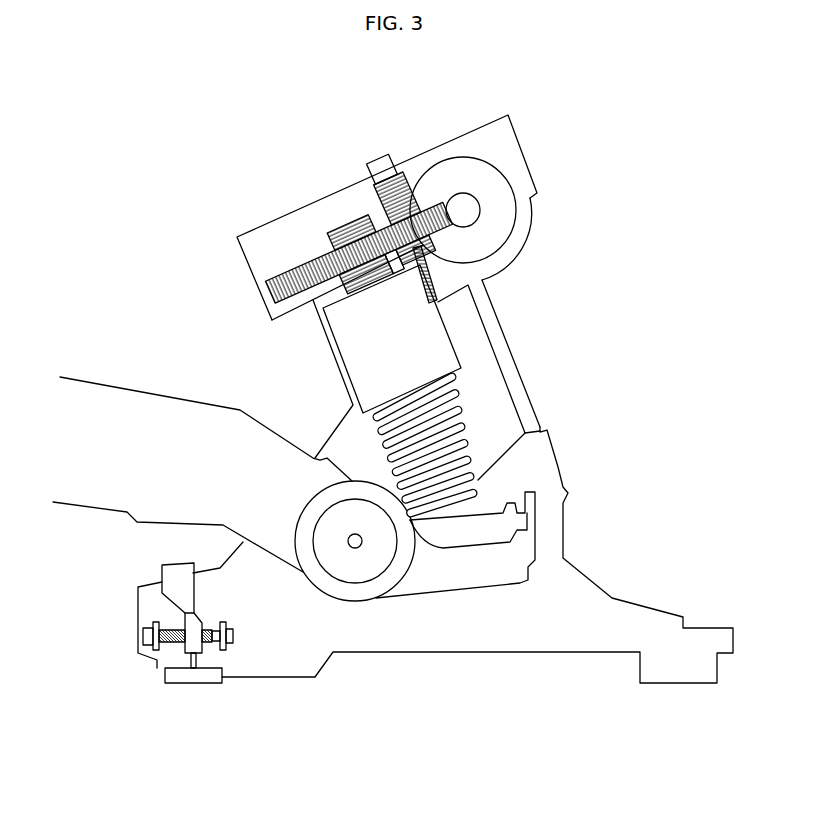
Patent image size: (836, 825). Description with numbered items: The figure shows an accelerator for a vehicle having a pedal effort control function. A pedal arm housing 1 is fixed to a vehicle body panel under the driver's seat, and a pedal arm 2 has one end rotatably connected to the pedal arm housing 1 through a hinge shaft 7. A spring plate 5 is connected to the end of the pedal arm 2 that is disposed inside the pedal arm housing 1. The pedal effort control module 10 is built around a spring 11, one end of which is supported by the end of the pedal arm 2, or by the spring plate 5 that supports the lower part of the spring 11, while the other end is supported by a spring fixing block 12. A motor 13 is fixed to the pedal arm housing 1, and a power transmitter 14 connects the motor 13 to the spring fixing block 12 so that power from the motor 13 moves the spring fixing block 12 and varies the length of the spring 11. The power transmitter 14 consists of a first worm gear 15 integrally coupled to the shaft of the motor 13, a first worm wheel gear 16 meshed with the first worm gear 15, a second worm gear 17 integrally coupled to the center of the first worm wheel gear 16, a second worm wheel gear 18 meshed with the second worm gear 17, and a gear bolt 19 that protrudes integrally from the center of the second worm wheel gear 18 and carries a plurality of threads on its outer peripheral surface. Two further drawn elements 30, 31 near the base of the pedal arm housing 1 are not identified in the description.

The pedal arm housing 1 is at (563, 525).
The pedal arm 2 is at (112, 405).
The spring plate 5 is at (465, 530).
The hinge shaft 7 is at (360, 575).
The pedal effort control module 10 is at (258, 266).
The spring 11 is at (467, 437).
The spring fixing block 12 is at (425, 342).
The motor 13 is at (490, 387).
The power transmitter 14 is at (515, 169).
The first worm gear 15 is at (375, 163).
The first worm wheel gear 16 is at (452, 170).
The second worm gear 17 is at (462, 212).
The second worm wheel gear 18 is at (297, 280).
The gear bolt 19 is at (353, 240).
The bolt assembly 30 is at (200, 655).
The stopper block 31 is at (175, 578).